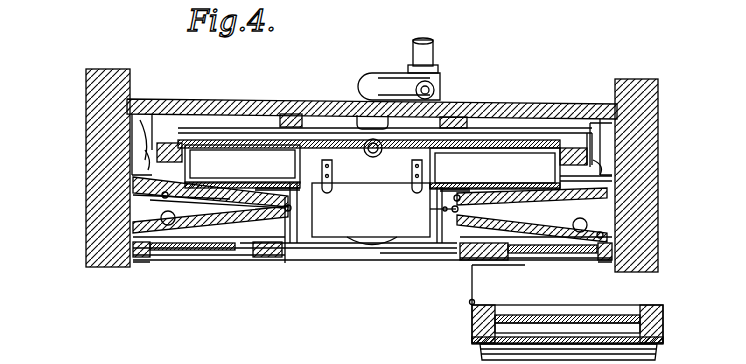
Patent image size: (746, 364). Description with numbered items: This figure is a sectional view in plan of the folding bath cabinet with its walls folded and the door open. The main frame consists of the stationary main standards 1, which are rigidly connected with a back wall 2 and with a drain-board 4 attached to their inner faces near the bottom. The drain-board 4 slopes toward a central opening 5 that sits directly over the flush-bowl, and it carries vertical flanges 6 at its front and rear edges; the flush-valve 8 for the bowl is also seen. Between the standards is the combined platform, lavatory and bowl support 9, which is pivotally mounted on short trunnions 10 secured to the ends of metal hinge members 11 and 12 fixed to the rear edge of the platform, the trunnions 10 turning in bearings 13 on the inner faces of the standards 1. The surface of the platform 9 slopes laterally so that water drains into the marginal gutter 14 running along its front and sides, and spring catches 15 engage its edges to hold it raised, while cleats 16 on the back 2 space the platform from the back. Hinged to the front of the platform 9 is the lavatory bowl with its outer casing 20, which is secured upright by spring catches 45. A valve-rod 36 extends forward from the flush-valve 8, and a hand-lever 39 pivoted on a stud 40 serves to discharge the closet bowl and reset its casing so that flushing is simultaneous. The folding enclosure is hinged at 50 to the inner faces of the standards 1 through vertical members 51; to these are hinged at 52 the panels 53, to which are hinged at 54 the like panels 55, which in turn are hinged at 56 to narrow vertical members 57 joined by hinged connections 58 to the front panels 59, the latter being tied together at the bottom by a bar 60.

The main standards 1 is at (87, 72).
The back wall 2 is at (198, 100).
The drain-board 4 is at (300, 236).
The central opening 5 is at (350, 239).
The vertical flanges 6 is at (228, 128).
The flush-valve 8 is at (398, 83).
The combined platform, lavatory and bowl support 9 is at (503, 140).
The trunnions 10 is at (200, 183).
The hinge member 11 is at (147, 130).
The hinge member 12 is at (272, 182).
The bearings 13 is at (152, 147).
The marginal gutter 14 is at (168, 143).
The spring catches 15 is at (143, 130).
The cleats 16 is at (317, 100).
The outer casing 20 is at (371, 210).
The valve-rod 36 is at (441, 245).
The hand-lever 39 is at (478, 266).
The stud 40 is at (432, 215).
The spring catches 45 is at (411, 181).
The hinge 50 is at (132, 192).
The vertical members 51 is at (135, 178).
The hinge 52 is at (133, 230).
The panels 53 is at (240, 182).
The hinge 54 is at (290, 246).
The panels 55 is at (252, 251).
The hinge 56 is at (168, 226).
The narrow vertical members 57 is at (133, 250).
The hinged connections 58 is at (140, 267).
The front panels 59 is at (192, 261).
The bar 60 is at (388, 256).